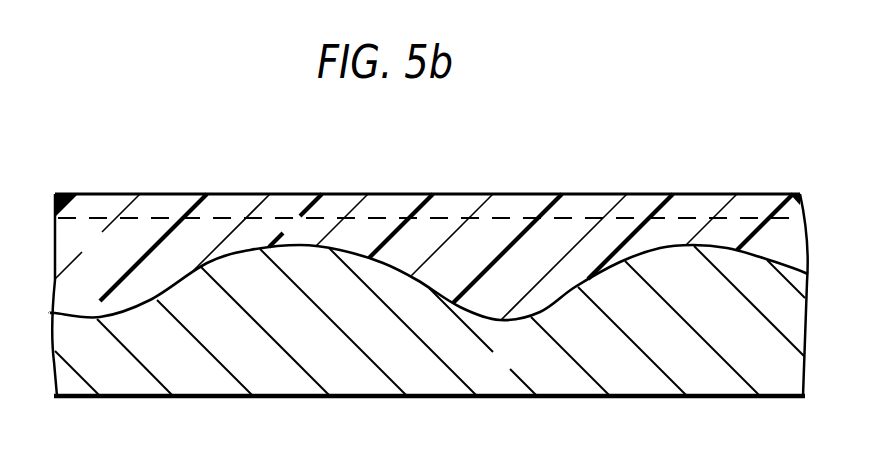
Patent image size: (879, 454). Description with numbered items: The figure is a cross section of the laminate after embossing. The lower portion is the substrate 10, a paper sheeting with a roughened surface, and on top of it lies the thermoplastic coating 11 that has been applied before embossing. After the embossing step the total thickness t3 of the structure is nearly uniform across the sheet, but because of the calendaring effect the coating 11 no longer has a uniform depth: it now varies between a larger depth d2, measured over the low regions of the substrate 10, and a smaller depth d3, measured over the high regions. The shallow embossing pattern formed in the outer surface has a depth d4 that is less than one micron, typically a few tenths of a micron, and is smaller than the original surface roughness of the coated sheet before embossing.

The substrate 10 is at (664, 374).
The coating 11 is at (635, 226).
The coating depth d2 is at (92, 208).
The coating depth d3 is at (290, 232).
The embossing pattern depth d4 is at (405, 232).
The thickness t3 is at (500, 382).